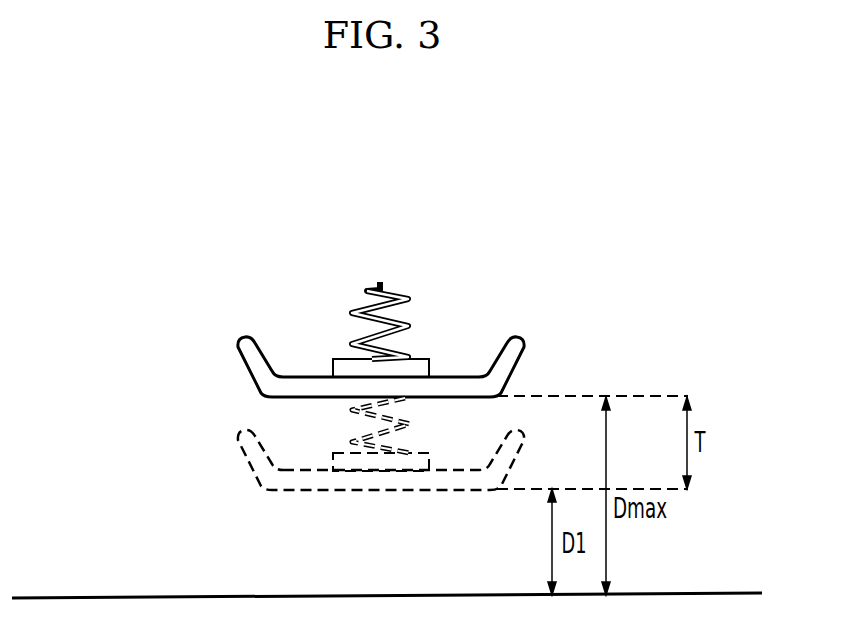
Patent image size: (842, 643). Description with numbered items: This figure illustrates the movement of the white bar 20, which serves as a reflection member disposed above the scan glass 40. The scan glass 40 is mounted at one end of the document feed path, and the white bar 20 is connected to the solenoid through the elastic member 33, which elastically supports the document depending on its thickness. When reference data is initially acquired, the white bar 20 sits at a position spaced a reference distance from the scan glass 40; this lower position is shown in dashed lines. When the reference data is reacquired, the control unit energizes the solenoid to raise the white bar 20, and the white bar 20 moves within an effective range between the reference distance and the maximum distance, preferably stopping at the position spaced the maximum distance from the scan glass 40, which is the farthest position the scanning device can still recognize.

The white bar 20 is at (518, 350).
The elastic member 33 is at (410, 294).
The scan glass 40 is at (161, 597).